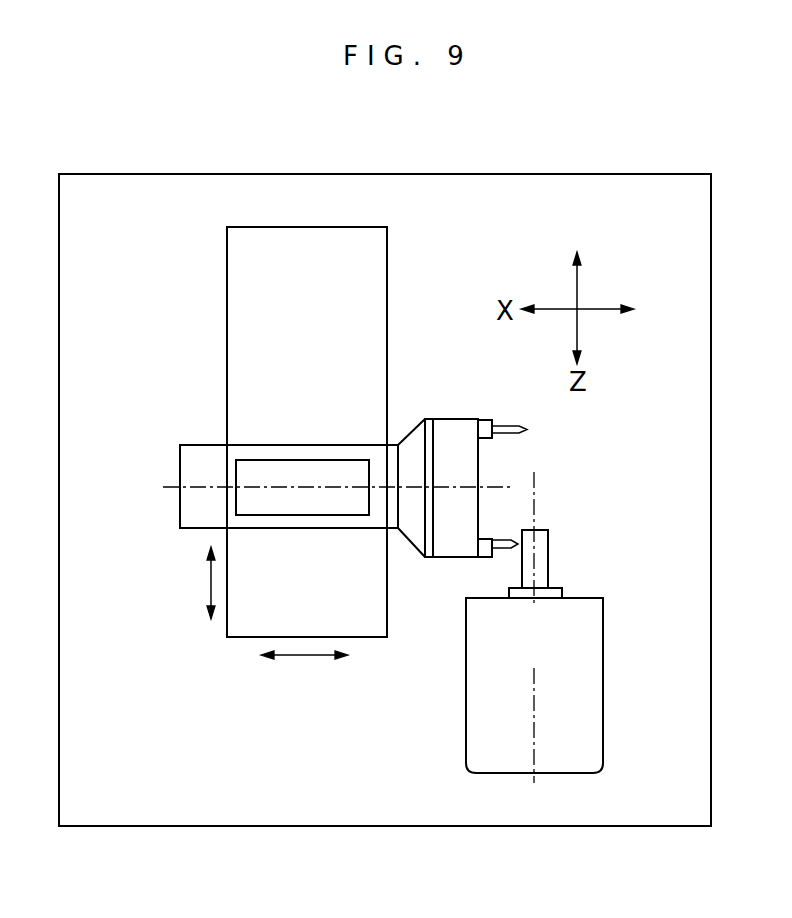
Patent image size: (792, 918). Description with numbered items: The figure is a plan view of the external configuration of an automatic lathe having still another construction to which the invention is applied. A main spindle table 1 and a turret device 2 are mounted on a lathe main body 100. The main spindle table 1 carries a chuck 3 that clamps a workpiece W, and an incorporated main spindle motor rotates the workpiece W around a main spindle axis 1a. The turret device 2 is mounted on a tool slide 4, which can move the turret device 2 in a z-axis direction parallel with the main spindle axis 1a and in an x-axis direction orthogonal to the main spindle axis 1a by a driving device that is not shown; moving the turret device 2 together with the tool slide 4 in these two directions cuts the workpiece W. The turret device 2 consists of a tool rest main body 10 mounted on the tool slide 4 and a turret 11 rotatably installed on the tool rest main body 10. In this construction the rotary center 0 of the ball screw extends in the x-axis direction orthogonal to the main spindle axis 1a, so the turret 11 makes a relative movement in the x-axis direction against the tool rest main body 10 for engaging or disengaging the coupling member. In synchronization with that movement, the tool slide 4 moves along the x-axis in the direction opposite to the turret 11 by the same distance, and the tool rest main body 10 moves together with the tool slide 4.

The lathe main body 100 is at (647, 170).
The tool slide 4 is at (331, 227).
The turret device 2 is at (201, 438).
The rotary center 0 is at (165, 487).
The tool rest main body 10 is at (190, 530).
The turret 11 is at (440, 558).
The workpiece W is at (548, 545).
The chuck 3 is at (562, 592).
The main spindle table 1 is at (603, 678).
The main spindle axis 1a is at (534, 745).